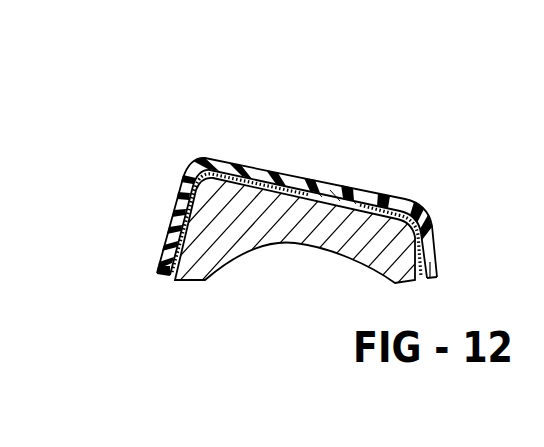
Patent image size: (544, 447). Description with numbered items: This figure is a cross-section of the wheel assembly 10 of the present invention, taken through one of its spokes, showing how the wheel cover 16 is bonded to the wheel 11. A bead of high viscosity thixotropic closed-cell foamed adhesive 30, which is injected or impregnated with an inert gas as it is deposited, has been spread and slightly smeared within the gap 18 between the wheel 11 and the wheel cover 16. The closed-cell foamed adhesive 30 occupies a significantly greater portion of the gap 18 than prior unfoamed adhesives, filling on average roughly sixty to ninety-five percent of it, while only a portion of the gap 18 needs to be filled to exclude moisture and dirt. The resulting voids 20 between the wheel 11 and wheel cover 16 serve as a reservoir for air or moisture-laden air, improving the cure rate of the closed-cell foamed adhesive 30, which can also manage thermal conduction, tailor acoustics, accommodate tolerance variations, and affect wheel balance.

The wheel assembly 10 is at (216, 112).
The wheel 11 is at (288, 258).
The wheel cover 16 is at (317, 185).
The voids 20 is at (308, 180).
The closed-cell foamed adhesive 30 is at (178, 184).
The gap 18 is at (157, 268).